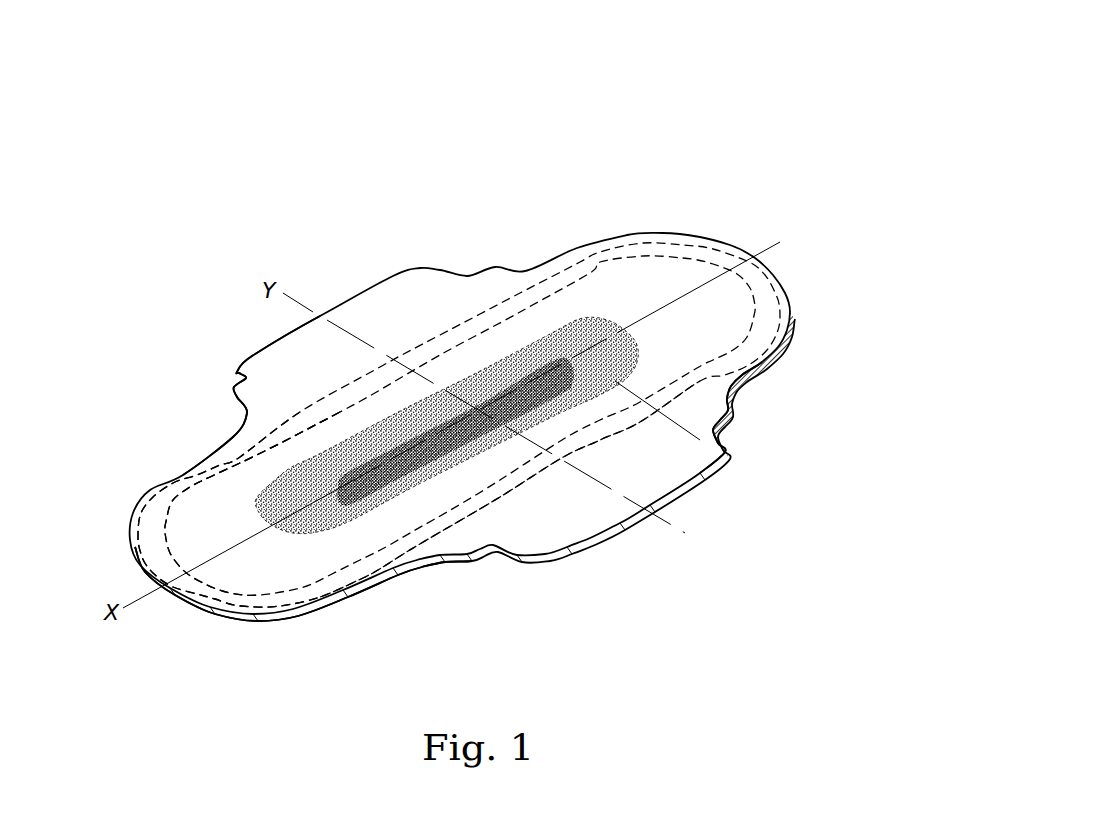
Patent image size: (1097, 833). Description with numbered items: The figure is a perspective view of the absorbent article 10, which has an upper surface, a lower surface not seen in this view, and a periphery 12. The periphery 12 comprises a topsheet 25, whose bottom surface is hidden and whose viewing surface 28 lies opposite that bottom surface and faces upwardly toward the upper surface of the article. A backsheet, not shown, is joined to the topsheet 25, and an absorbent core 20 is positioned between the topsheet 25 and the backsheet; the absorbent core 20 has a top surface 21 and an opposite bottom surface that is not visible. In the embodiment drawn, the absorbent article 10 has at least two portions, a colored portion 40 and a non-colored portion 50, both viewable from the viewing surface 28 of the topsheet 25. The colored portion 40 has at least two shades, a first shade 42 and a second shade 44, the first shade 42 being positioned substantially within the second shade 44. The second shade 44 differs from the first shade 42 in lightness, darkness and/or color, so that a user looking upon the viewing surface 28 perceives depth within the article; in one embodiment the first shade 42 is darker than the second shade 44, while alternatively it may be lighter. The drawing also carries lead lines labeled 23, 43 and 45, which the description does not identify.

The absorbent article 10 is at (692, 102).
The periphery 12 is at (577, 248).
The absorbent core 20 is at (637, 263).
The top surface 21 is at (727, 313).
The peripheral edge seal 23 is at (393, 577).
The topsheet 25 is at (218, 500).
The viewing surface 28 is at (300, 447).
The colored portion 40 is at (465, 352).
The first shade 42 is at (388, 450).
The second side flap 43 is at (726, 455).
The second shade 44 is at (278, 508).
The longitudinal side region 45 is at (457, 477).
The non-colored portion 50 is at (198, 538).